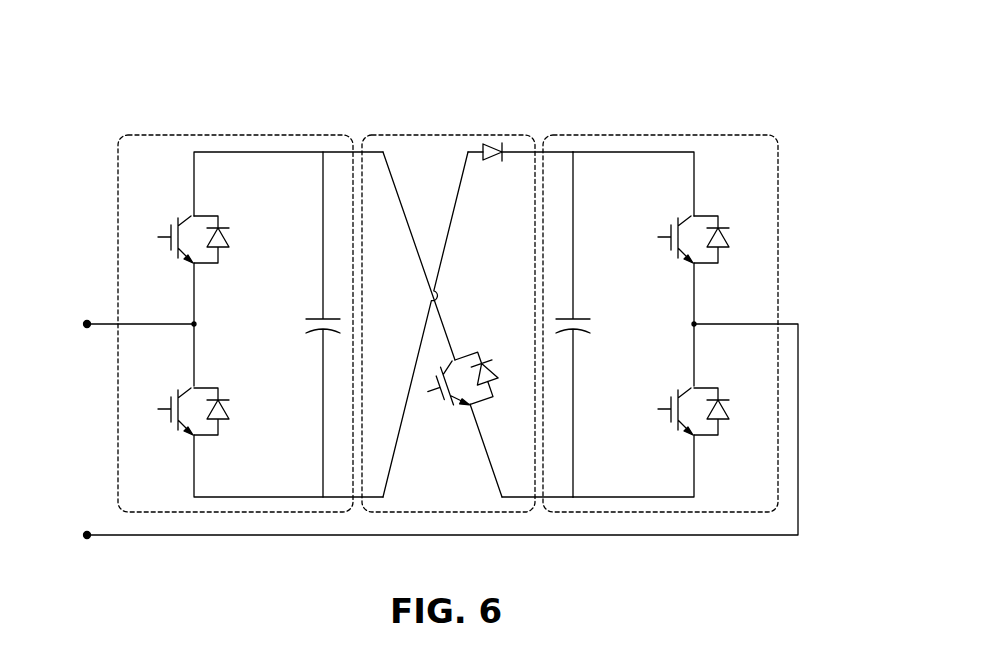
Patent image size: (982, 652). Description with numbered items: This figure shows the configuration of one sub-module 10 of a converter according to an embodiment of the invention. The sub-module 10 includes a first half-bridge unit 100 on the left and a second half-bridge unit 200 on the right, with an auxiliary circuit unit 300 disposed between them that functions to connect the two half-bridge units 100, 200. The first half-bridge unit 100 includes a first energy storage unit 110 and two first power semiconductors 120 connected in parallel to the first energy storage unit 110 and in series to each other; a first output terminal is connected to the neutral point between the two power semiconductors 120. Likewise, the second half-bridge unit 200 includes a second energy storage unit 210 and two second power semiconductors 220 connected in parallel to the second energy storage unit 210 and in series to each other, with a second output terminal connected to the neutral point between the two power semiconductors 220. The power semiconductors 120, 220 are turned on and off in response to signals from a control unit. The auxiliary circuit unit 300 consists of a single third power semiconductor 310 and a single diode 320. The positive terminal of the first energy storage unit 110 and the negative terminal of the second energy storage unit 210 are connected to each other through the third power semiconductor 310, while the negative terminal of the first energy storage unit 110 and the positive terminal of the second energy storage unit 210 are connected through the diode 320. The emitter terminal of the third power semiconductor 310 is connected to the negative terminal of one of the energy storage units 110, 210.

The sub-module 10 is at (417, 70).
The first half-bridge unit 100 is at (250, 130).
The first energy storage unit 110 is at (321, 314).
The first power semiconductors 120 is at (224, 270).
The second half-bridge unit 200 is at (675, 130).
The second energy storage unit 210 is at (576, 314).
The second power semiconductors 220 is at (675, 266).
The auxiliary circuit unit 300 is at (437, 130).
The third power semiconductor 310 is at (476, 347).
The diode 320 is at (497, 141).